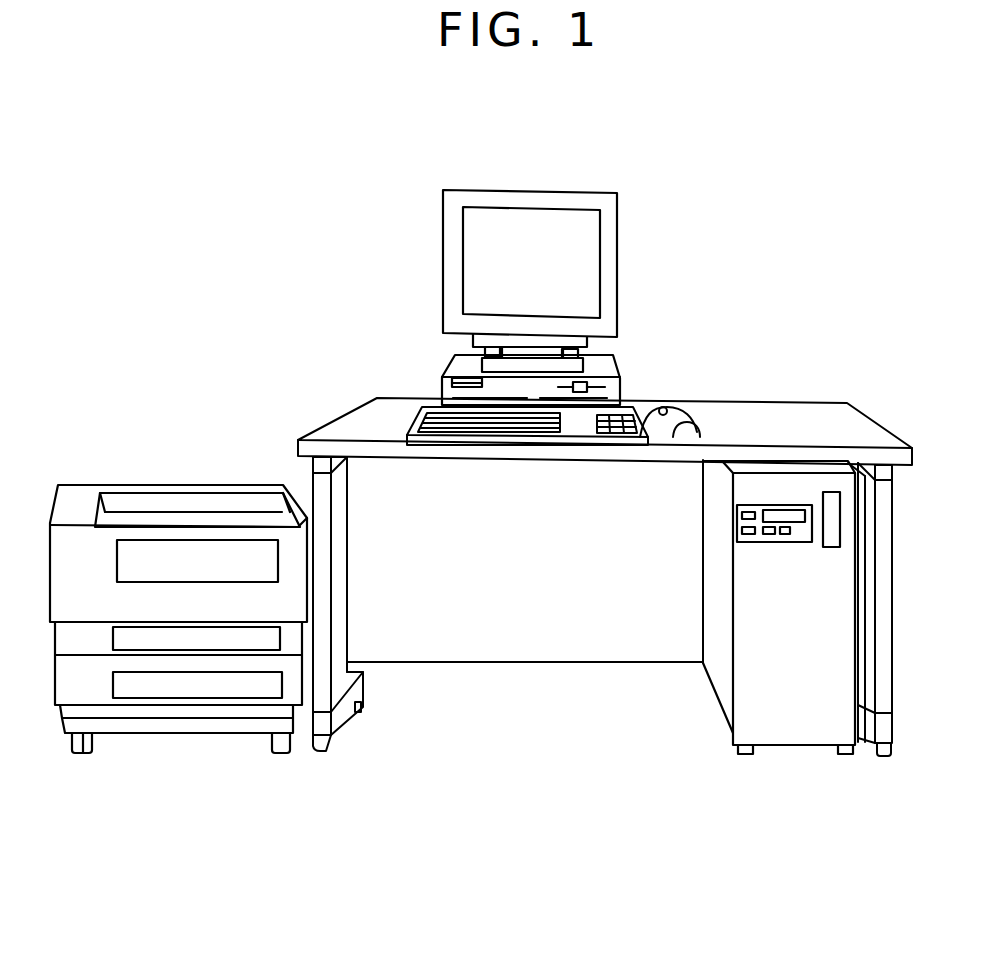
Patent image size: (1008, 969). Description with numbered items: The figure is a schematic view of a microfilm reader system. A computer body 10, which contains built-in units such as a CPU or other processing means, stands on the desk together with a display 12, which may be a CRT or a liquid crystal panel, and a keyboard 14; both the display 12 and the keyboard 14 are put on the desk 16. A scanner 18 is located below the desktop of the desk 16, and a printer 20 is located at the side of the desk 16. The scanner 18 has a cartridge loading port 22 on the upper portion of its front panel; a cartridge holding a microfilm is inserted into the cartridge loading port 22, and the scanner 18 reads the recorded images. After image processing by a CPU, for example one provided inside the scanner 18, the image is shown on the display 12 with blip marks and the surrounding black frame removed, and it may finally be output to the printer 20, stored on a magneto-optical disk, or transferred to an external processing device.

The computer body 10 is at (620, 367).
The display 12 is at (618, 235).
The keyboard 14 is at (407, 425).
The desk 16 is at (792, 402).
The scanner 18 is at (797, 730).
The printer 20 is at (165, 485).
The cartridge loading port 22 is at (833, 547).